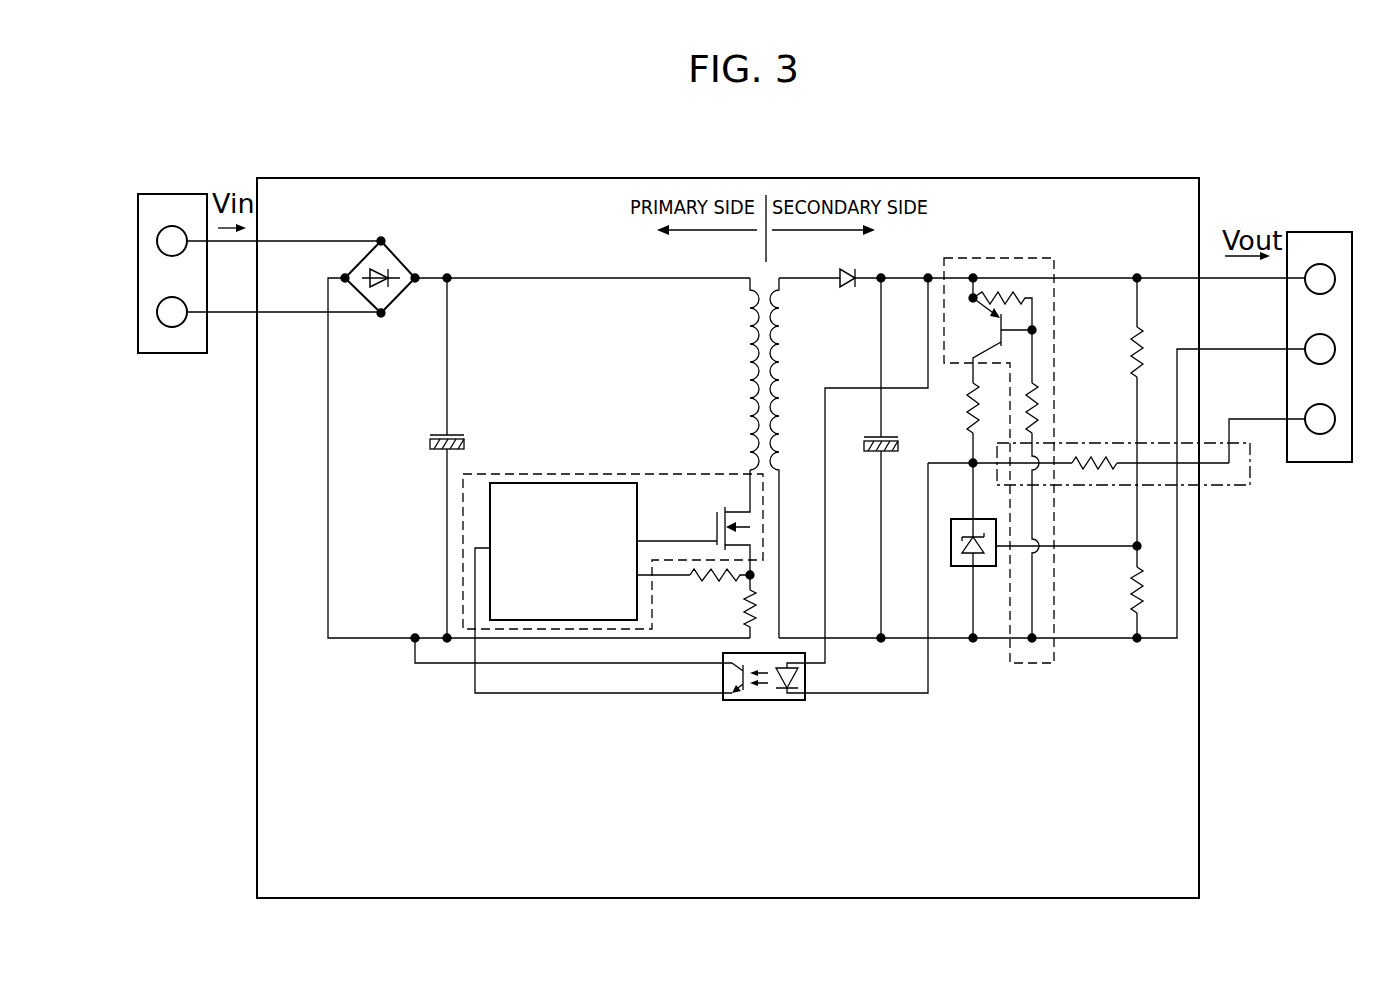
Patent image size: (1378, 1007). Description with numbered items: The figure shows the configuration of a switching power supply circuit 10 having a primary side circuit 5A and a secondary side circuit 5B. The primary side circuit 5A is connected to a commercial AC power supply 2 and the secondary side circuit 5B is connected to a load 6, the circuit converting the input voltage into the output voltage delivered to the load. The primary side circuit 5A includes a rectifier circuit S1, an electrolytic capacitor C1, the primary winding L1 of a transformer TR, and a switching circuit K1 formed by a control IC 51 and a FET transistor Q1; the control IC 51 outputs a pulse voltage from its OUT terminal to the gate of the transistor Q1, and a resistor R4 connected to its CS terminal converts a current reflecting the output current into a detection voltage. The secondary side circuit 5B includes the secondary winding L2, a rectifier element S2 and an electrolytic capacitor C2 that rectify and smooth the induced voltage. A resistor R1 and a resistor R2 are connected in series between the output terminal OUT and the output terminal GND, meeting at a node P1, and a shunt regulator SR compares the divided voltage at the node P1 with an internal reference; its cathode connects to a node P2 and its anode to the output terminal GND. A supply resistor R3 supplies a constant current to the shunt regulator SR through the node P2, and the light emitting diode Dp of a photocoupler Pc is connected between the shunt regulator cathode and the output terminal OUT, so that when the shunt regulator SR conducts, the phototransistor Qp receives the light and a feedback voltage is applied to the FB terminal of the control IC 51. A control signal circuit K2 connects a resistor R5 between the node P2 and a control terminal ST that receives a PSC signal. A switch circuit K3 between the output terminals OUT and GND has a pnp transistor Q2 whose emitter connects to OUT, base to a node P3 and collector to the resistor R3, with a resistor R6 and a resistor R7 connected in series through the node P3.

The commercial AC power supply 2 is at (170, 194).
The load 6 is at (1320, 232).
The switching power supply circuit 10 is at (631, 178).
The primary side circuit 5A is at (509, 208).
The secondary side circuit 5B is at (996, 208).
The control IC 51 is at (610, 483).
The rectifier circuit S1 is at (400, 262).
The rectifier element S2 is at (850, 266).
The transformer TR is at (768, 435).
The primary winding L1 is at (748, 342).
The secondary winding L2 is at (779, 342).
The electrolytic capacitor C1 is at (440, 452).
The electrolytic capacitor C2 is at (875, 455).
The switching circuit K1 is at (525, 474).
The control signal circuit K2 is at (1250, 487).
The switch circuit K3 is at (1005, 258).
The transistor Q1 is at (717, 502).
The transistor Q2 is at (991, 340).
The resistor R1 is at (1158, 412).
The resistor R2 is at (1119, 592).
The supply resistor R3 is at (954, 423).
The resistor R4 is at (697, 580).
The resistor R5 is at (1090, 468).
The resistor R6 is at (1025, 292).
The resistor R7 is at (1042, 395).
The node P1 is at (1140, 544).
The node P2 is at (972, 466).
The node P3 is at (1040, 332).
The shunt regulator SR is at (970, 568).
The photocoupler Pc is at (671, 527).
The phototransistor Qp is at (740, 696).
The light emitting diode Dp is at (800, 680).
The output terminal OUT is at (1165, 276).
The output terminal GND is at (1233, 348).
The control terminal ST is at (1320, 434).